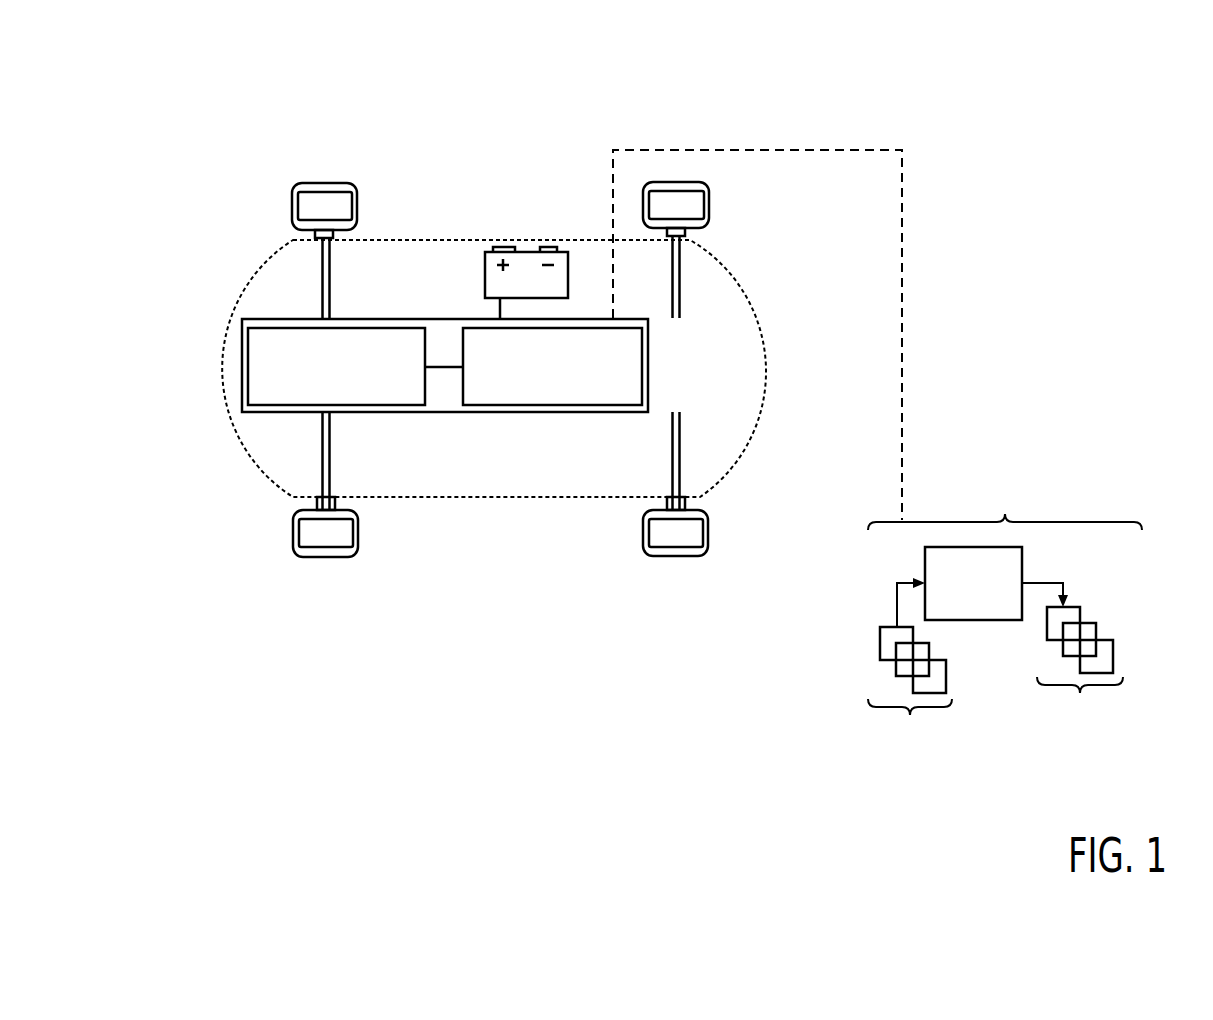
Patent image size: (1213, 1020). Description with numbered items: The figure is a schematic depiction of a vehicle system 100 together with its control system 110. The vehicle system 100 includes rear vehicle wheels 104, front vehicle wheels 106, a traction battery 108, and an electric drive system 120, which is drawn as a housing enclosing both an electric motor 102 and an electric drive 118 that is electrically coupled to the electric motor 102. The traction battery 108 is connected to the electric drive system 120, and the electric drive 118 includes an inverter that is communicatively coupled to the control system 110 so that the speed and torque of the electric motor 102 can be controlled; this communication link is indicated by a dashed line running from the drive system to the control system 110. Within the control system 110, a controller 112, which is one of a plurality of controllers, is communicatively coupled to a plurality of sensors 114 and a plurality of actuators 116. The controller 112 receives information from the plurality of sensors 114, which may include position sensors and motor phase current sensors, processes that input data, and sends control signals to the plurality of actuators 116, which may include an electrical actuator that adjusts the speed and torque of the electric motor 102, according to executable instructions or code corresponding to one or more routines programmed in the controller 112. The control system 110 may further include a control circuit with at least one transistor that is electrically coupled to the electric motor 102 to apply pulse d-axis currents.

The vehicle system 100 is at (788, 96).
The electric motor 102 is at (263, 410).
The rear vehicle wheels 104 is at (325, 558).
The front vehicle wheels 106 is at (672, 558).
The traction battery 108 is at (513, 252).
The control system 110 is at (1005, 499).
The controller 112 is at (973, 583).
The plurality of sensors 114 is at (910, 693).
The plurality of actuators 116 is at (1080, 674).
The electric drive 118 is at (558, 407).
The electric drive system 120 is at (447, 413).